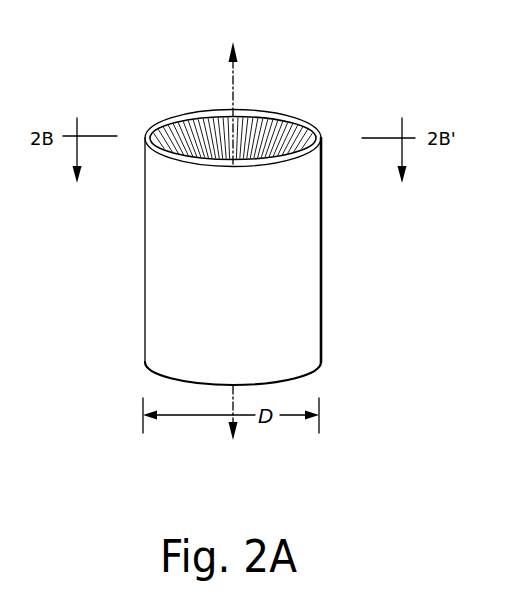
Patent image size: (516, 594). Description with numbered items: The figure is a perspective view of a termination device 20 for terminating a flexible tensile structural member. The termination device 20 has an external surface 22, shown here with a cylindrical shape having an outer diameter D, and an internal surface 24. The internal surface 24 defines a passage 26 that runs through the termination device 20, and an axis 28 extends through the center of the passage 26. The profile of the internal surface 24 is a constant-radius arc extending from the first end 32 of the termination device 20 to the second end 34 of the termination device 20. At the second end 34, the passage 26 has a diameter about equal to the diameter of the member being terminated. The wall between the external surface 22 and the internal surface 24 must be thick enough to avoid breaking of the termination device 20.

The termination device 20 is at (273, 204).
The external surface 22 is at (297, 258).
The internal surface 24 is at (207, 130).
The passage 26 is at (268, 128).
The axis 28 is at (235, 80).
The first end 32 is at (314, 144).
The second end 34 is at (322, 363).